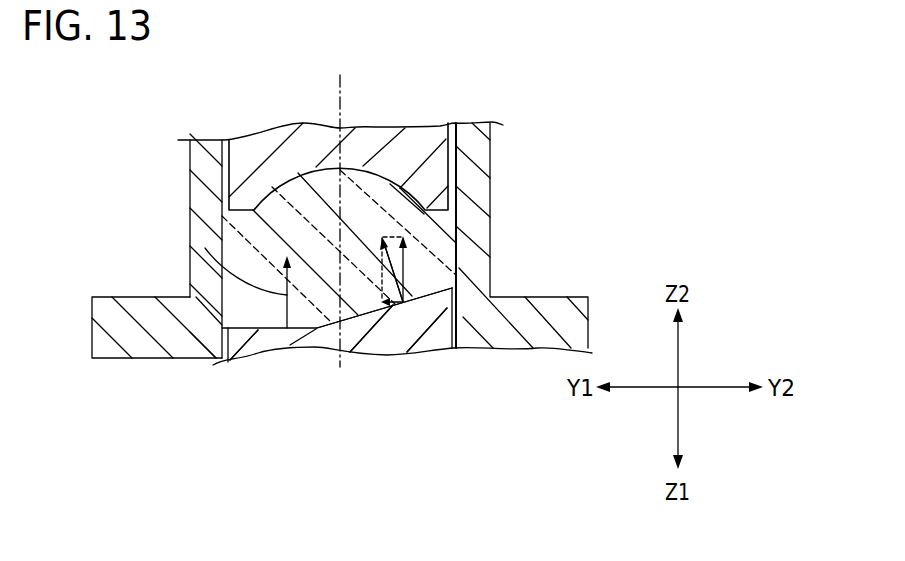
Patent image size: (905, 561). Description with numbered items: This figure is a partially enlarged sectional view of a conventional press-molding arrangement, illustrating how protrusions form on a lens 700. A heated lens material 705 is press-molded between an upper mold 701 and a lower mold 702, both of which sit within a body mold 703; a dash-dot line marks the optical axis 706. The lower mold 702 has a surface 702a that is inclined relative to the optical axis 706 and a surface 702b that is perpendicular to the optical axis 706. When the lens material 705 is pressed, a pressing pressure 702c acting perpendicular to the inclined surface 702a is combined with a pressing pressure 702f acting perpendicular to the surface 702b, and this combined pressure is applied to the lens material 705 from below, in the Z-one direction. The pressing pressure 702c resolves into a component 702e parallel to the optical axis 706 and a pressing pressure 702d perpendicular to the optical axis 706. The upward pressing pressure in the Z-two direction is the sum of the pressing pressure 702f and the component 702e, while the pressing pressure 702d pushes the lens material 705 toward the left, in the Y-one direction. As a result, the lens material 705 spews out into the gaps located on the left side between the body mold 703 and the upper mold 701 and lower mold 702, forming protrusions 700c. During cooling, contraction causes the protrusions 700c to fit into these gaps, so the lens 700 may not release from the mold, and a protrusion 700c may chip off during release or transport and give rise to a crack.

The lens 700 is at (358, 182).
The protrusions 700c is at (224, 206).
The upper mold 701 is at (262, 137).
The lower mold 702 is at (328, 343).
The surface inclined relative to the optical axis 702a is at (413, 305).
The surface perpendicular to the optical axis 702b is at (238, 330).
The pressing pressure 702c is at (405, 282).
The pressing pressure 702d is at (393, 303).
The component of the pressing pressure 702e is at (400, 268).
The pressing pressure 702f is at (205, 248).
The body mold 703 is at (207, 152).
The lens material 705 is at (399, 208).
The optical axis 706 is at (340, 85).